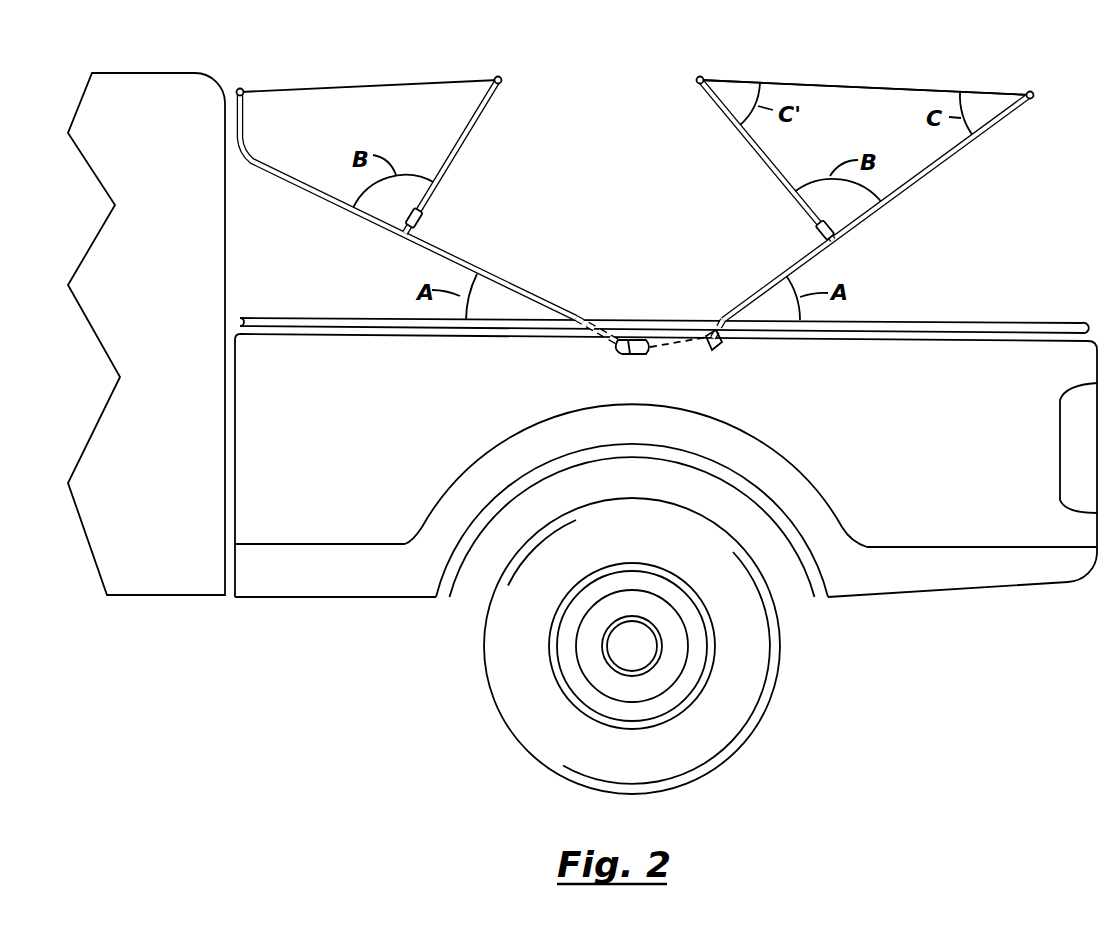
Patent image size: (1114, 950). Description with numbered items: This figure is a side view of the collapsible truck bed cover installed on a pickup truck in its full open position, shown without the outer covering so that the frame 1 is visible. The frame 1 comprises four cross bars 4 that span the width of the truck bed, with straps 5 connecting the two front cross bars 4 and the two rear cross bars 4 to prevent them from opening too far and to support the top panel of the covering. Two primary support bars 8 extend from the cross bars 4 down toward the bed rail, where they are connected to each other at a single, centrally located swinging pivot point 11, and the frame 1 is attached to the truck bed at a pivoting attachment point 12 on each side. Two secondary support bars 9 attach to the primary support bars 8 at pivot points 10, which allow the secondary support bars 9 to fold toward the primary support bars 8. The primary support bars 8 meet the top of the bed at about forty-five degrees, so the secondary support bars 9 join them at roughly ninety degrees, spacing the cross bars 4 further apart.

The frame 1 is at (963, 180).
The cross bars 4 is at (238, 88).
The straps 5 is at (360, 83).
The primary support bars 8 is at (362, 218).
The secondary support bars 9 is at (458, 150).
The pivot points 10 is at (414, 229).
The swinging pivot point 11 is at (630, 352).
The pivoting attachment point 12 is at (716, 344).